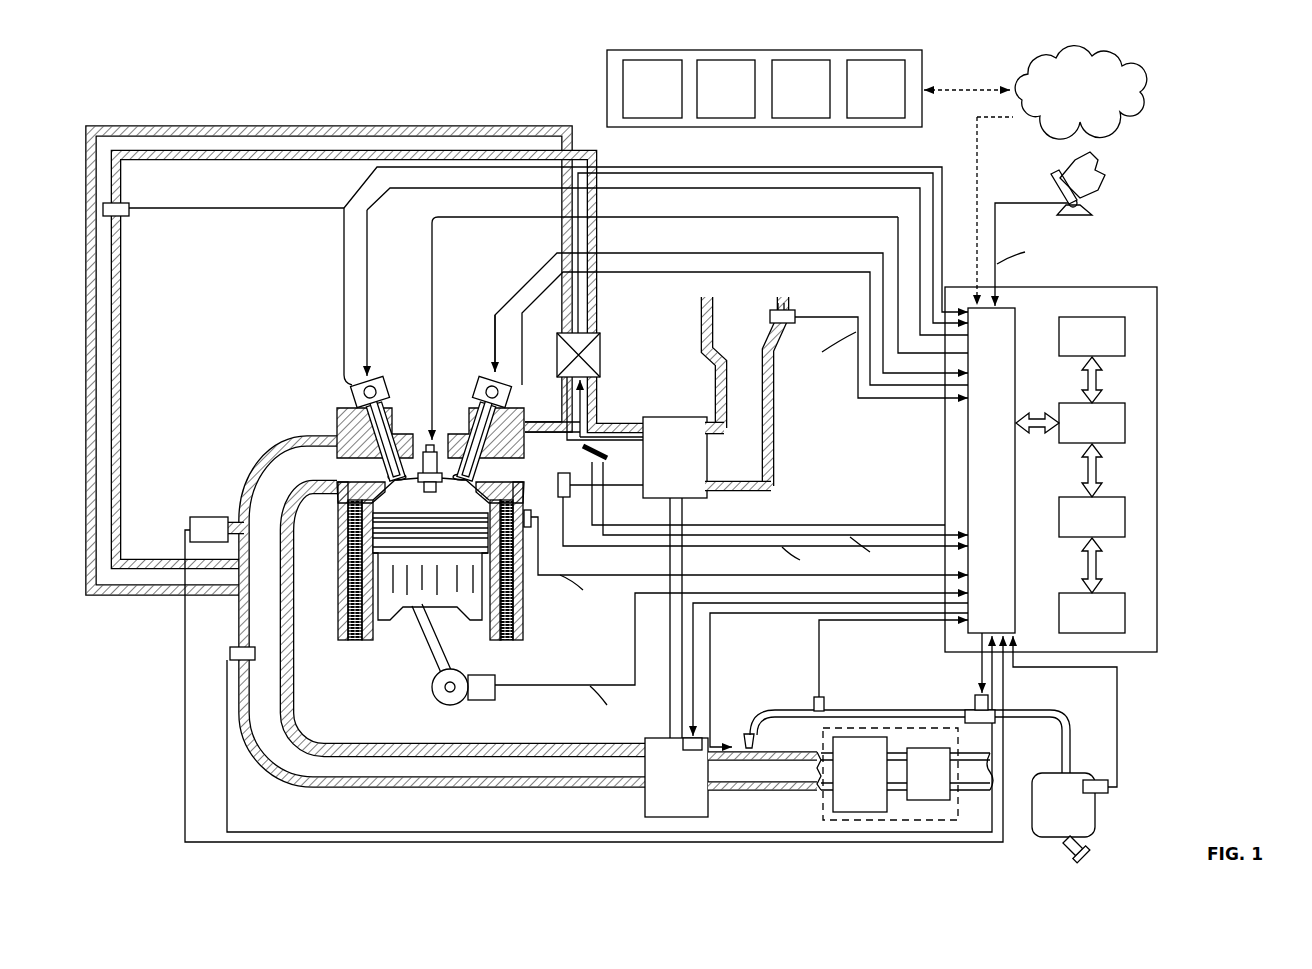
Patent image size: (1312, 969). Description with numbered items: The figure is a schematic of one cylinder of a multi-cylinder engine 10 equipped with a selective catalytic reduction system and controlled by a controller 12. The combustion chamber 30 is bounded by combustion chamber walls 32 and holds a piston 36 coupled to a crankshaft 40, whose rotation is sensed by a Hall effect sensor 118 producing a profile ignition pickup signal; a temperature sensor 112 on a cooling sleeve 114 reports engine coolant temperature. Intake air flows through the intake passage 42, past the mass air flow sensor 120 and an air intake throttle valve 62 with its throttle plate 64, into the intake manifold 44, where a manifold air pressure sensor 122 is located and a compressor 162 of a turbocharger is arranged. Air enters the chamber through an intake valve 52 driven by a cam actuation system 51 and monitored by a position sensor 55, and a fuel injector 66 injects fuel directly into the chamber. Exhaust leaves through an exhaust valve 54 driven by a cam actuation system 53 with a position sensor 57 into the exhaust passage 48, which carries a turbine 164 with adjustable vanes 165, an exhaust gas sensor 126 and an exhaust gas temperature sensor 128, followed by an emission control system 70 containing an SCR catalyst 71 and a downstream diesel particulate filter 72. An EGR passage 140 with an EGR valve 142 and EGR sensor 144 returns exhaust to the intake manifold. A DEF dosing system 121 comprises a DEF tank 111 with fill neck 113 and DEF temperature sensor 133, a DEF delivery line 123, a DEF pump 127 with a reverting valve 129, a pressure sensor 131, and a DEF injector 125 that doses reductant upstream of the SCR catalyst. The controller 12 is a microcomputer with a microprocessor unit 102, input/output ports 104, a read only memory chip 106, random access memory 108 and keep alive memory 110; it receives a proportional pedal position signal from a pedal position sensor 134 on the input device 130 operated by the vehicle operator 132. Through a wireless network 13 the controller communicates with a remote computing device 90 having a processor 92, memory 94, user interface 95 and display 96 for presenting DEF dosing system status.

The engine 10 is at (270, 357).
The controller 12 is at (1157, 290).
The wireless network 13 is at (1081, 93).
The combustion chamber 30 is at (400, 505).
The combustion chamber walls 32 is at (378, 642).
The piston 36 is at (416, 600).
The crankshaft 40 is at (440, 702).
The intake passage 42 is at (744, 391).
The intake manifold 44 is at (596, 418).
The exhaust passage 48 is at (444, 611).
The cam actuation system 51 is at (484, 378).
The intake valve 52 is at (452, 476).
The cam actuation system 53 is at (373, 380).
The exhaust valve 54 is at (342, 436).
The position sensor 55 is at (506, 392).
The position sensor 57 is at (357, 389).
The air intake throttle valve 62 is at (596, 448).
The throttle plate 64 is at (605, 455).
The fuel injector 66 is at (436, 445).
The emission control system 70 is at (878, 727).
The SCR catalyst 71 is at (860, 774).
The diesel particulate filter 72 is at (928, 774).
The remote computing device 90 is at (838, 127).
The processor 92 is at (652, 89).
The memory 94 is at (726, 89).
The user interface 95 is at (801, 89).
The display 96 is at (876, 89).
The microprocessor unit 102 is at (1125, 421).
The input/output ports 104 is at (1016, 313).
The read only memory chip 106 is at (1125, 330).
The random access memory 108 is at (1125, 513).
The keep alive memory 110 is at (1125, 612).
The DEF tank 111 is at (1063, 805).
The temperature sensor 112 is at (532, 527).
The fill neck 113 is at (1058, 848).
The cooling sleeve 114 is at (520, 595).
The Hall effect sensor 118 is at (482, 700).
The mass air flow sensor 120 is at (793, 311).
The DEF dosing system 121 is at (876, 669).
The manifold air pressure sensor 122 is at (559, 476).
The DEF delivery line 123 is at (905, 710).
The DEF injector 125 is at (747, 738).
The exhaust gas sensor 126 is at (190, 520).
The DEF pump 127 is at (968, 712).
The exhaust gas temperature sensor 128 is at (230, 652).
The reverting valve 129 is at (994, 702).
The input device 130 is at (1060, 182).
The pressure sensor 131 is at (814, 702).
The vehicle operator 132 is at (1106, 170).
The DEF temperature sensor 133 is at (1098, 780).
The pedal position sensor 134 is at (1093, 208).
The EGR passage 140 is at (350, 128).
The EGR valve 142 is at (600, 356).
The EGR sensor 144 is at (130, 216).
The compressor 162 is at (675, 577).
The turbine 164 is at (733, 777).
The vanes 165 is at (683, 742).